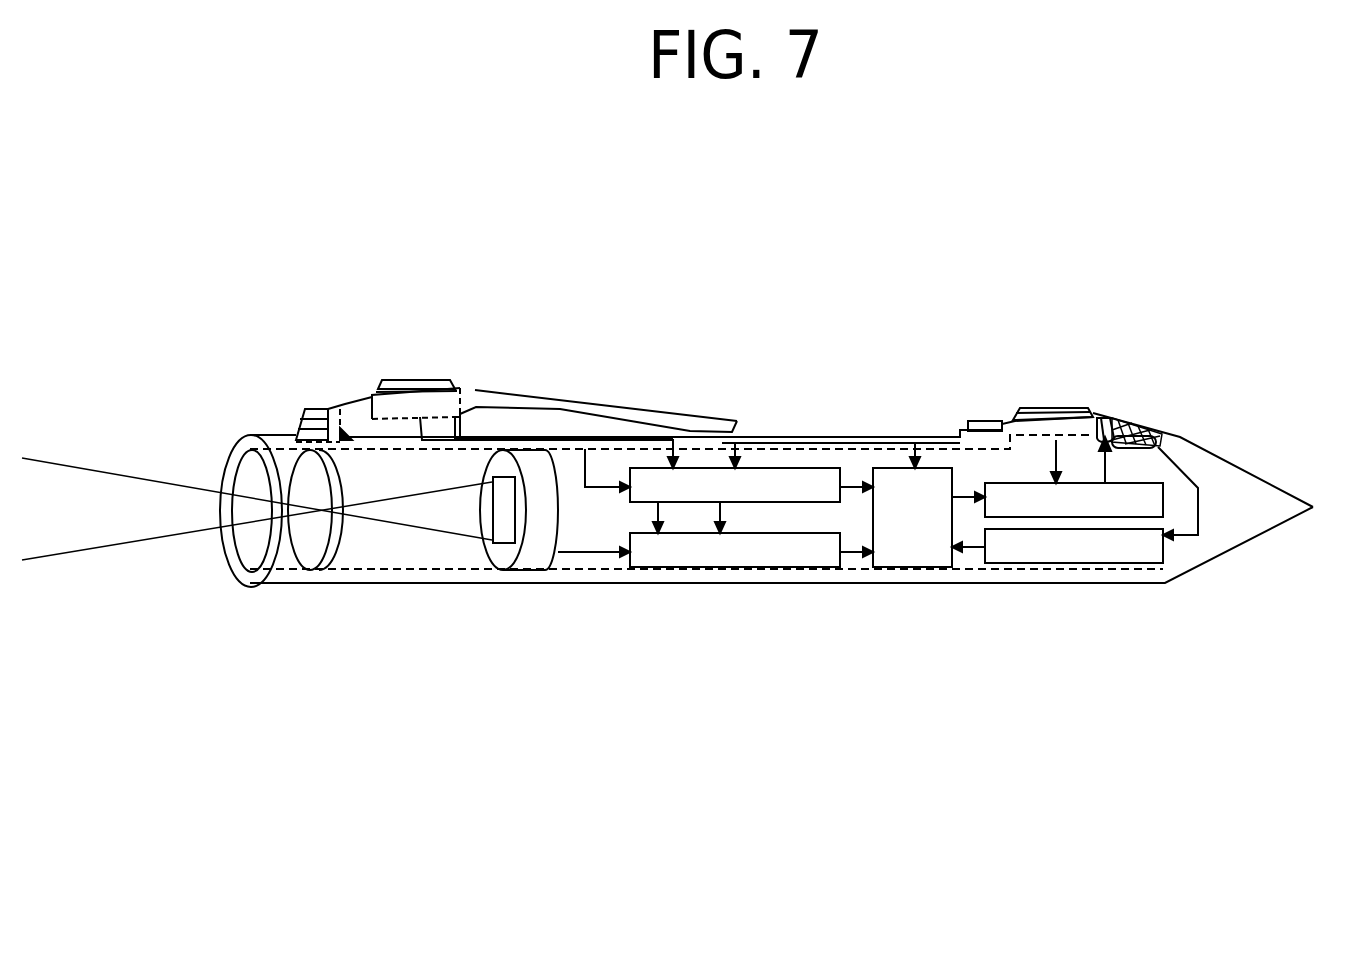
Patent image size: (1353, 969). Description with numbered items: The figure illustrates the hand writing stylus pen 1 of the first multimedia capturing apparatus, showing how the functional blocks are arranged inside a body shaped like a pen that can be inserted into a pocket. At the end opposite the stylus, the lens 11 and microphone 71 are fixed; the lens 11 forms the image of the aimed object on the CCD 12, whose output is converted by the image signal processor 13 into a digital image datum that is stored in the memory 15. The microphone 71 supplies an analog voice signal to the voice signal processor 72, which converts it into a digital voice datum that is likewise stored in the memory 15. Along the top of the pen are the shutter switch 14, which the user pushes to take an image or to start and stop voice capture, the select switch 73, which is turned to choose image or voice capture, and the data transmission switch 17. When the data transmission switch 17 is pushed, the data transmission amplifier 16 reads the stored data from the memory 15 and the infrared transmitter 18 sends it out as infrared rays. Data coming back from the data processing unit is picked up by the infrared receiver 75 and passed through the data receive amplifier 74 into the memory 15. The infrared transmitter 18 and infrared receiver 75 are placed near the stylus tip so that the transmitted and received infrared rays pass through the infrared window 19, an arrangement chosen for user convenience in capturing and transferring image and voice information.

The hand writing stylus pen 1 is at (1347, 164).
The lens 11 is at (308, 540).
The charge coupled diode type electronic imaging device (CCD) 12 is at (502, 518).
The image signal processor 13 is at (727, 563).
The shutter button switch 14 is at (402, 380).
The memory 15 is at (935, 562).
The data transmission amplifier 16 is at (1118, 483).
The data transmission button switch 17 is at (1040, 408).
The infrared transmitter 18 is at (1100, 418).
The infrared window 19 is at (1113, 422).
The microphone 71 is at (297, 415).
The voice signal processor 72 is at (787, 468).
The select switch 73 is at (968, 423).
The data receive amplifier 74 is at (1163, 550).
The infrared receiver 75 is at (1155, 447).